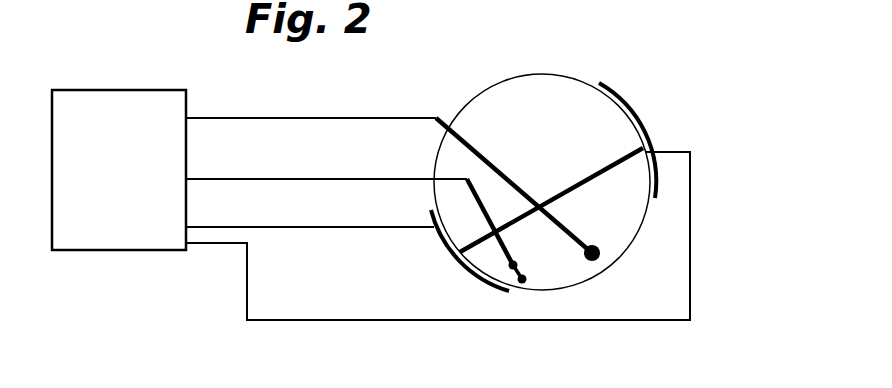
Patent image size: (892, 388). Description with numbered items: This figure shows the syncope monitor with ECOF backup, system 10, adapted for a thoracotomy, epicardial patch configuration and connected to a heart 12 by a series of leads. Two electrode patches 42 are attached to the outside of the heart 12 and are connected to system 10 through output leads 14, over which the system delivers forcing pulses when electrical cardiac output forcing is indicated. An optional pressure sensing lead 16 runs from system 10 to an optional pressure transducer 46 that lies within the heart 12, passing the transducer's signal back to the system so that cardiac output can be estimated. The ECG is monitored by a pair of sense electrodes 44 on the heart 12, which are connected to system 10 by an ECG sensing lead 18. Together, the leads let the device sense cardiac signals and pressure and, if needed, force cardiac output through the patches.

The system 10 is at (175, 90).
The heart 12 is at (463, 108).
The output lead 14 is at (232, 228).
The pressure sensing lead 16 is at (243, 117).
The ECG sensing lead 18 is at (278, 178).
The electrode patches 42 is at (635, 110).
The sense electrodes 44 is at (526, 278).
The pressure transducer 46 is at (600, 246).